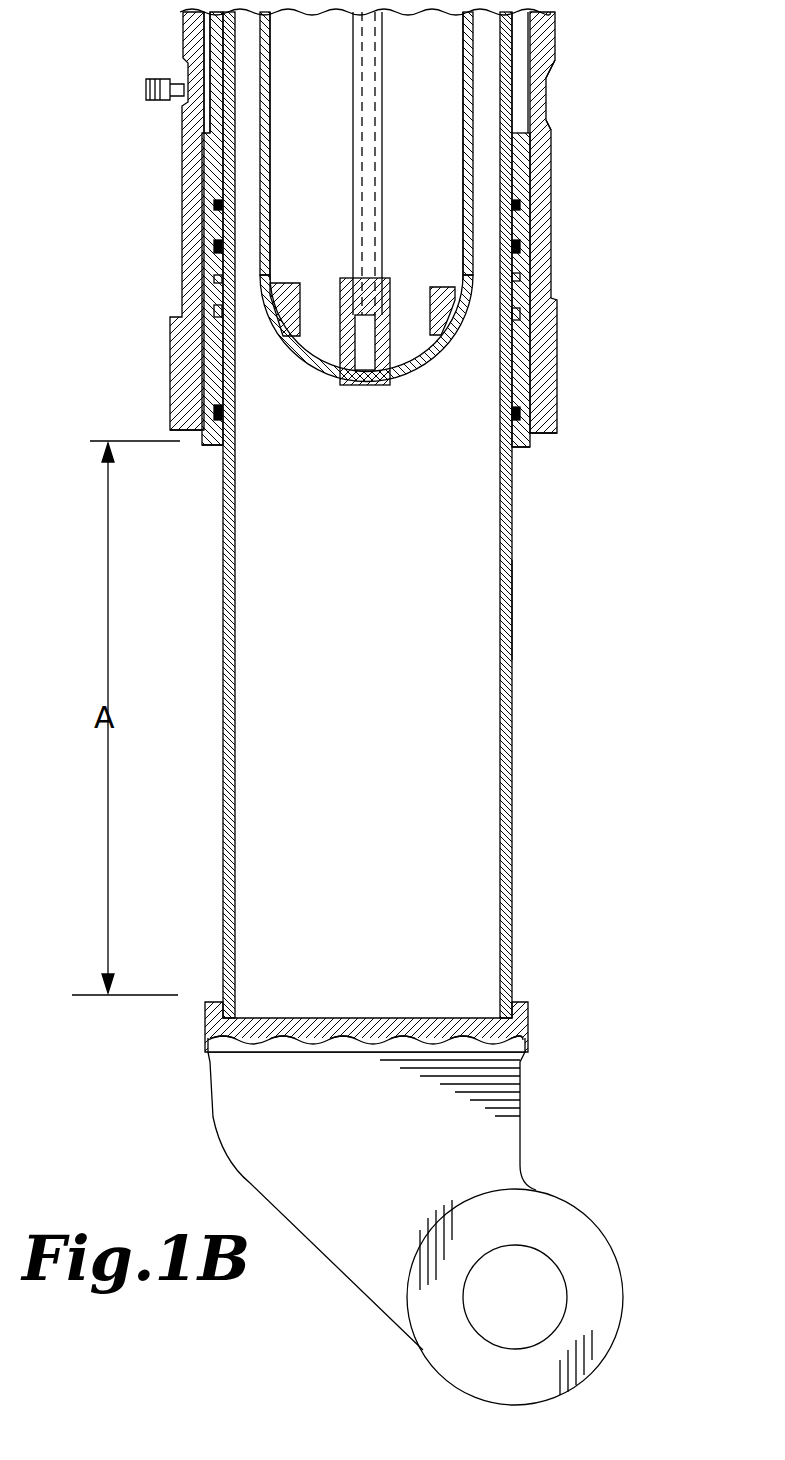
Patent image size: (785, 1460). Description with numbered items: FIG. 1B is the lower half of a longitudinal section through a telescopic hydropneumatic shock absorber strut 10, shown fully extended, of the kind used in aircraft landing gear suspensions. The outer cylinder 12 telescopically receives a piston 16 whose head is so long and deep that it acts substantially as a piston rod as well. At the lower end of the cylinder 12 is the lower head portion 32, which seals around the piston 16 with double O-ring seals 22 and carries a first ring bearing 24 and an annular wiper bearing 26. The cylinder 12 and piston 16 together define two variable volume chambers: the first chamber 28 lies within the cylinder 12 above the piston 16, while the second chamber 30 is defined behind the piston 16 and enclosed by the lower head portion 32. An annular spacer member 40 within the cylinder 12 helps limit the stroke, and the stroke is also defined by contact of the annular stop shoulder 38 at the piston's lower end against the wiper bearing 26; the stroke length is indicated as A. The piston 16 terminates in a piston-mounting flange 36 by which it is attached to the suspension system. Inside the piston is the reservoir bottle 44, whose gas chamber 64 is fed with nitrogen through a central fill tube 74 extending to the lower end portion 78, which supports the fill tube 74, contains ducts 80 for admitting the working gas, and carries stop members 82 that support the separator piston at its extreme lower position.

The telescopic hydropneumatic shock absorber strut 10 is at (608, 422).
The cylinder 12 is at (546, 223).
The piston 16 is at (510, 886).
The double O-ring seals 22 is at (212, 283).
The first ring bearing 24 is at (533, 240).
The annular wiper bearing 26 is at (522, 449).
The first chamber 28 is at (480, 612).
The second chamber 30 is at (517, 56).
The lower head portion 32 is at (529, 180).
The piston-mounting flange 36 is at (500, 1127).
The annular stop shoulder 38 is at (530, 1001).
The annular spacer member 40 is at (548, 117).
The reservoir bottle 44 is at (265, 218).
The gas chamber 64 is at (290, 105).
The central fill tube 74 is at (352, 158).
The lower end portion 78 is at (428, 362).
The ducts 80 is at (345, 335).
The stop members 82 is at (288, 318).